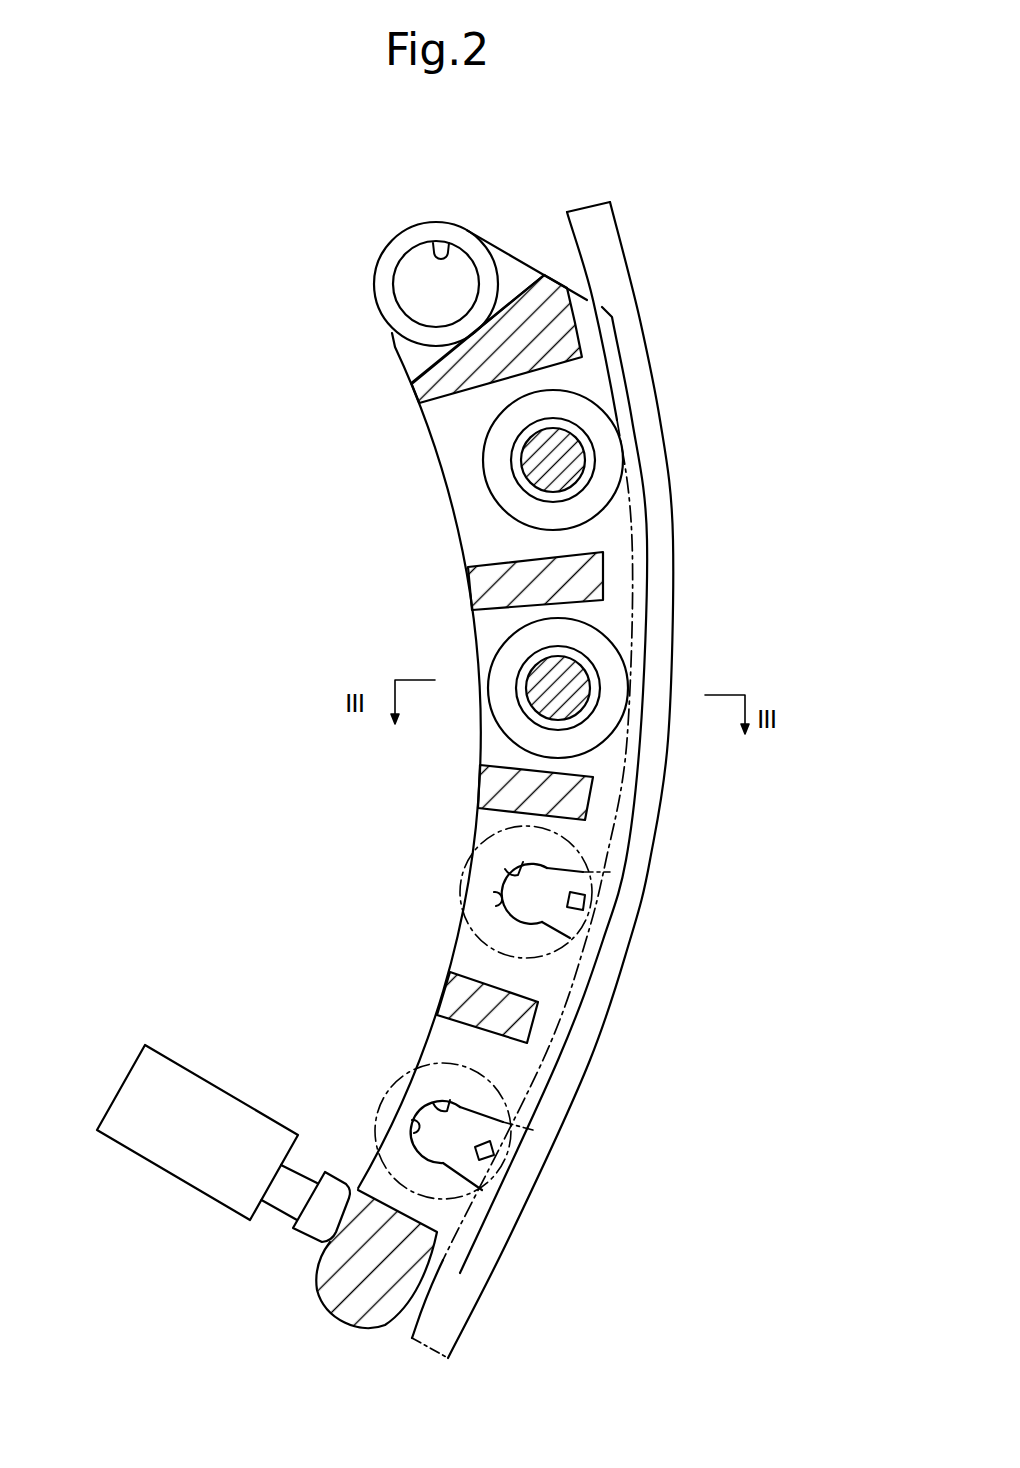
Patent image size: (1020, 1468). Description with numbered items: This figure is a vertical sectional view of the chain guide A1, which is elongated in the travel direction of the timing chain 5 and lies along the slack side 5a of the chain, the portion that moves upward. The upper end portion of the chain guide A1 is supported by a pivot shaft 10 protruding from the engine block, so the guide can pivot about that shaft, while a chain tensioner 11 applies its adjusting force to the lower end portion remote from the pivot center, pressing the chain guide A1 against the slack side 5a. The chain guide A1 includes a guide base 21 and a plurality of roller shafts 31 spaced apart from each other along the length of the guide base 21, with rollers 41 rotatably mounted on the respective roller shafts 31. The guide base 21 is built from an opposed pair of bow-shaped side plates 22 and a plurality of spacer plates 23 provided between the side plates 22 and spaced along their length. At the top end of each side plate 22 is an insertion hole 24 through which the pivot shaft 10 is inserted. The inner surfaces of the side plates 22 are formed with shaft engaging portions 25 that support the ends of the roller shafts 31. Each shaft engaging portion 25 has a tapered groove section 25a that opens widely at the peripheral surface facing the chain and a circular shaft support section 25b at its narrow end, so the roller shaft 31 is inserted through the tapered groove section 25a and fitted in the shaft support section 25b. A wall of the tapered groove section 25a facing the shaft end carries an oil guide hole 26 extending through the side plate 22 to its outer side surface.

The timing chain 5 is at (632, 235).
The slack side 5a is at (637, 322).
The pivot shaft 10 is at (413, 273).
The chain tensioner 11 is at (141, 1037).
The guide base 21 is at (419, 433).
The side plates 22 is at (462, 480).
The spacer plates 23 is at (490, 587).
The insertion hole 24 is at (441, 248).
The shaft engaging portion 25 is at (507, 870).
The tapered groove section 25a is at (583, 873).
The shaft support section 25b is at (495, 900).
The oil guide hole 26 is at (585, 905).
The roller shaft 31 is at (580, 460).
The roller 41 is at (607, 432).
The chain guide A1 is at (384, 331).